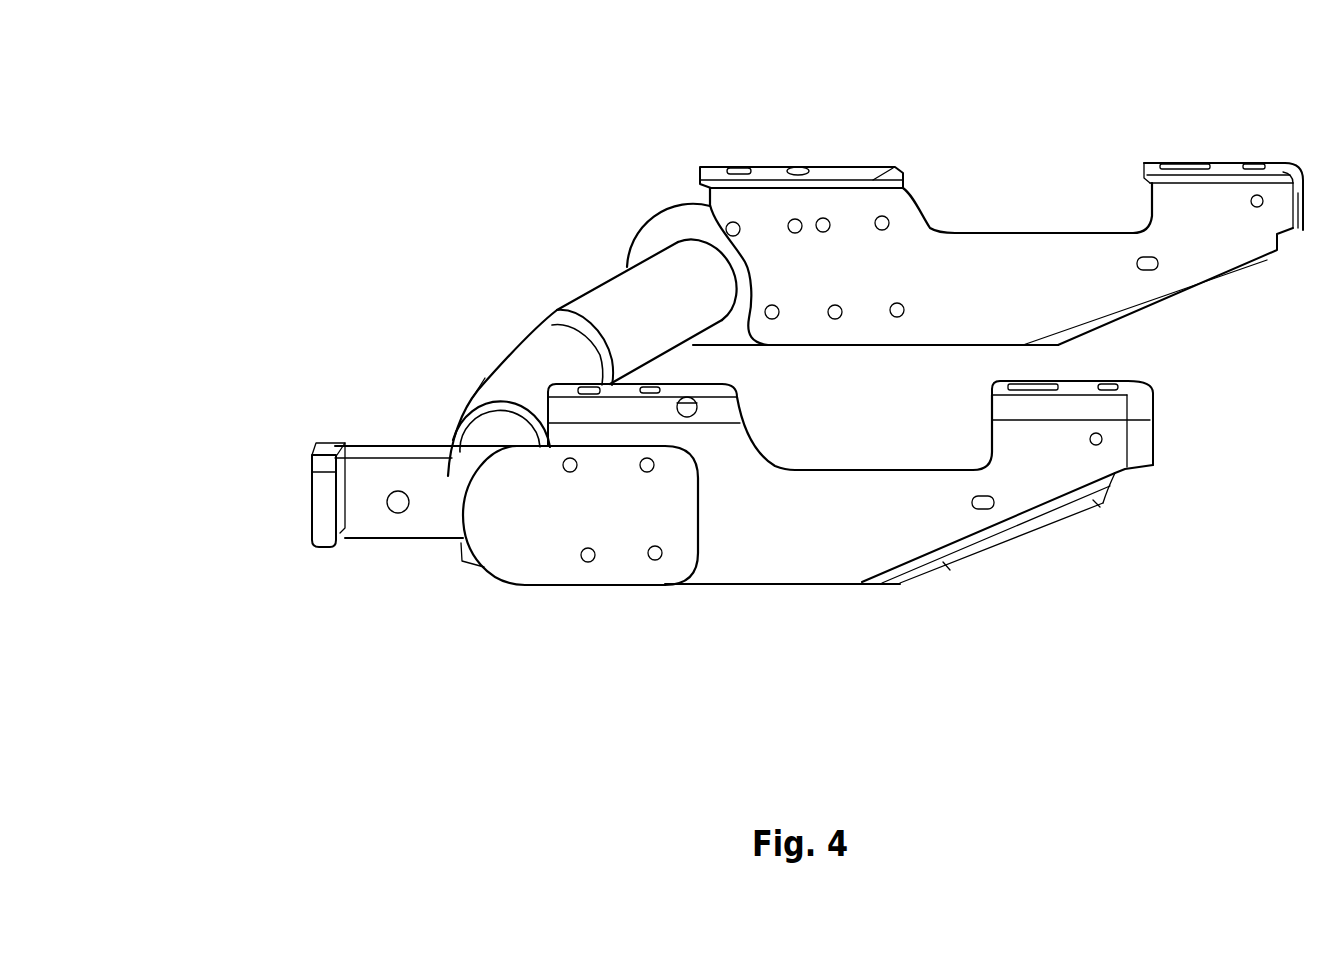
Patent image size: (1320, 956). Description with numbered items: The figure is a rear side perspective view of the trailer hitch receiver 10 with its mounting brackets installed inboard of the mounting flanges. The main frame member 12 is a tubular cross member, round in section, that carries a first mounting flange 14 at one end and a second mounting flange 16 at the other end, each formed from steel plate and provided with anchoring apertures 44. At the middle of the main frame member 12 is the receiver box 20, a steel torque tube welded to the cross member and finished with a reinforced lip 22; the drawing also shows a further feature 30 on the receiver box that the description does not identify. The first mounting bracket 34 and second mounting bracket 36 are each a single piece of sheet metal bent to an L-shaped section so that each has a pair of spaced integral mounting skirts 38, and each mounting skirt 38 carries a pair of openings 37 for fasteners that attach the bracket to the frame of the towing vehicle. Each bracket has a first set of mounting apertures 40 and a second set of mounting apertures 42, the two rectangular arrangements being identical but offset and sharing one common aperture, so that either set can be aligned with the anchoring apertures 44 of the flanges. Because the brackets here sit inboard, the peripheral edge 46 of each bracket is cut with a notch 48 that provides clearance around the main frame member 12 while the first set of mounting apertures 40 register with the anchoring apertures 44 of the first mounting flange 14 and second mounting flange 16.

The trailer hitch receiver 10 is at (305, 165).
The main frame member 12 is at (583, 300).
The first mounting flange 14 is at (663, 213).
The second mounting flange 16 is at (555, 563).
The receiver box 20 is at (376, 528).
The reinforced lip 22 is at (313, 523).
The pin hole 30 is at (391, 492).
The first mounting bracket 34 is at (1027, 242).
The second mounting bracket 36 is at (818, 495).
The openings 37 is at (800, 165).
The mounting skirt 38 is at (843, 167).
The first set of mounting apertures 40 is at (740, 232).
The second set of mounting apertures 42 is at (898, 305).
The anchoring apertures 44 is at (577, 470).
The peripheral edge 46 is at (867, 349).
The notch 48 is at (713, 280).